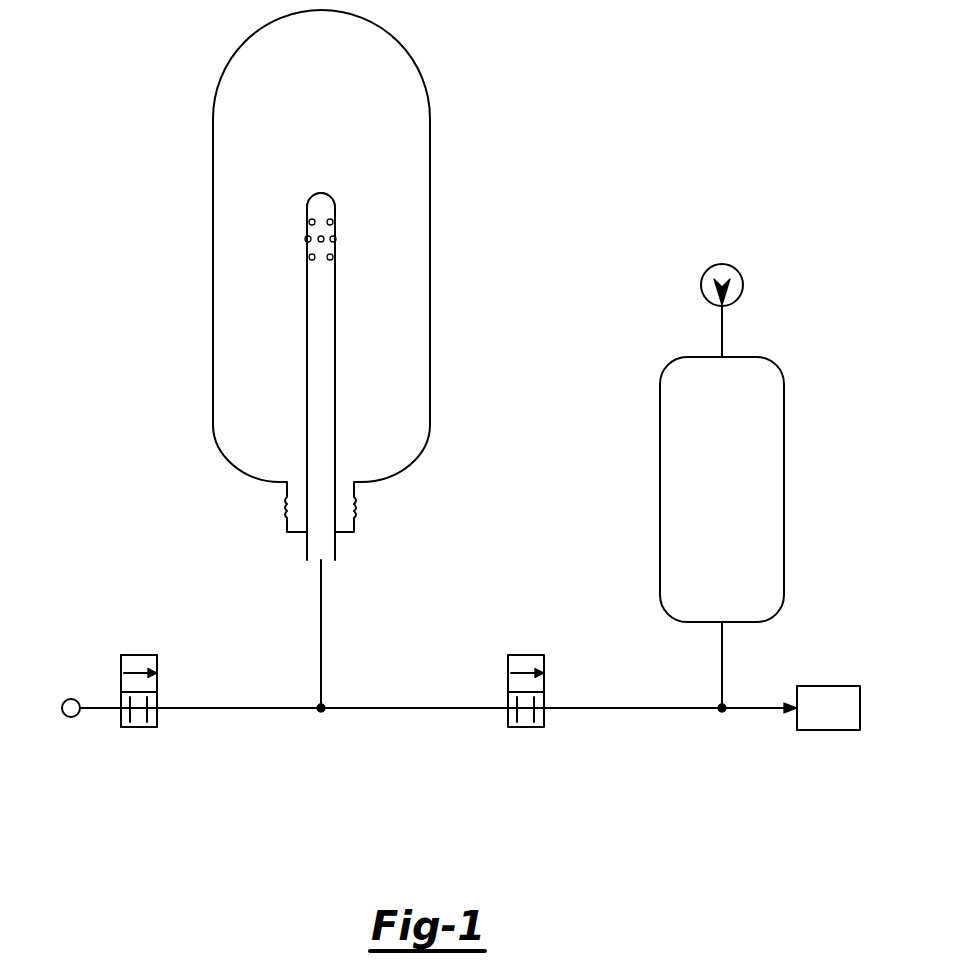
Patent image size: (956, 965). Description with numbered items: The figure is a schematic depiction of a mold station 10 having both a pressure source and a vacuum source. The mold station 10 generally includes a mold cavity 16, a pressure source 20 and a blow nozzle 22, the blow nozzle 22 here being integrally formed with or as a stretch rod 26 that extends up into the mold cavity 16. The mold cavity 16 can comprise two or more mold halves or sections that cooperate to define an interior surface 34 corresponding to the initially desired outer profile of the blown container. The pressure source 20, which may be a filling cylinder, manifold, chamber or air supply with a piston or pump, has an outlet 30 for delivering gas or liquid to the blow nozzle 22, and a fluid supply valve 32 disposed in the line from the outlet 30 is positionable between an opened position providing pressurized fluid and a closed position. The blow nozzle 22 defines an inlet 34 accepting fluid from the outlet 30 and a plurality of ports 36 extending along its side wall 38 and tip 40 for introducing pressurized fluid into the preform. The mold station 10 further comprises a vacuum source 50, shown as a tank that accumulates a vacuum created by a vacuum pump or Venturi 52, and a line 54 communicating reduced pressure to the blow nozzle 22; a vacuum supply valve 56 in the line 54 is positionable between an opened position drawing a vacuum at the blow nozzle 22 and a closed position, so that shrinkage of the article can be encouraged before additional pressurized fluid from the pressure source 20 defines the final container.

The mold station 10 is at (617, 133).
The mold cavity 16 is at (430, 137).
The pressure source 20 is at (71, 699).
The blow nozzle 22 is at (320, 346).
The stretch rod 26 is at (335, 298).
The outlet 30 is at (102, 707).
The fluid supply valve 32 is at (131, 655).
The inlet 34 is at (430, 352).
The ports 36 is at (325, 243).
The side wall 38 is at (307, 413).
The tip 40 is at (322, 193).
The vacuum source 50 is at (660, 462).
The vacuum pump or Venturi 52 is at (825, 686).
The line 54 is at (612, 706).
The vacuum supply valve 56 is at (522, 655).